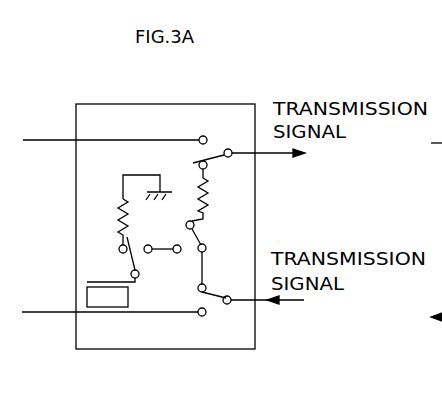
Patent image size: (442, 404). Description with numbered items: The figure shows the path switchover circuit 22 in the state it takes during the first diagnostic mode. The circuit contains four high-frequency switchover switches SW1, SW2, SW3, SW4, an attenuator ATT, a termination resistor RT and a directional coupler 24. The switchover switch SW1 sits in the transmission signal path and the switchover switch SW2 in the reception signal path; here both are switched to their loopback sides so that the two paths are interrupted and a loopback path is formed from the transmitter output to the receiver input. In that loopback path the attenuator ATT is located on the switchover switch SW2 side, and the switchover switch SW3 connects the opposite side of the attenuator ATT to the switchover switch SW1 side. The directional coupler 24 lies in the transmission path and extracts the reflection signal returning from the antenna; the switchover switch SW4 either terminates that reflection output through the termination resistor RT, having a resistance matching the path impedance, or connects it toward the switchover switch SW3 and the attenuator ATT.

The path switchover circuit 22 is at (167, 104).
The directional coupler 24 is at (107, 318).
The switchover switch SW1 is at (163, 313).
The switchover switch SW2 is at (164, 143).
The switchover switch SW3 is at (216, 256).
The switchover switch SW4 is at (137, 262).
The termination resistor RT is at (129, 214).
The attenuator ATT is at (221, 195).